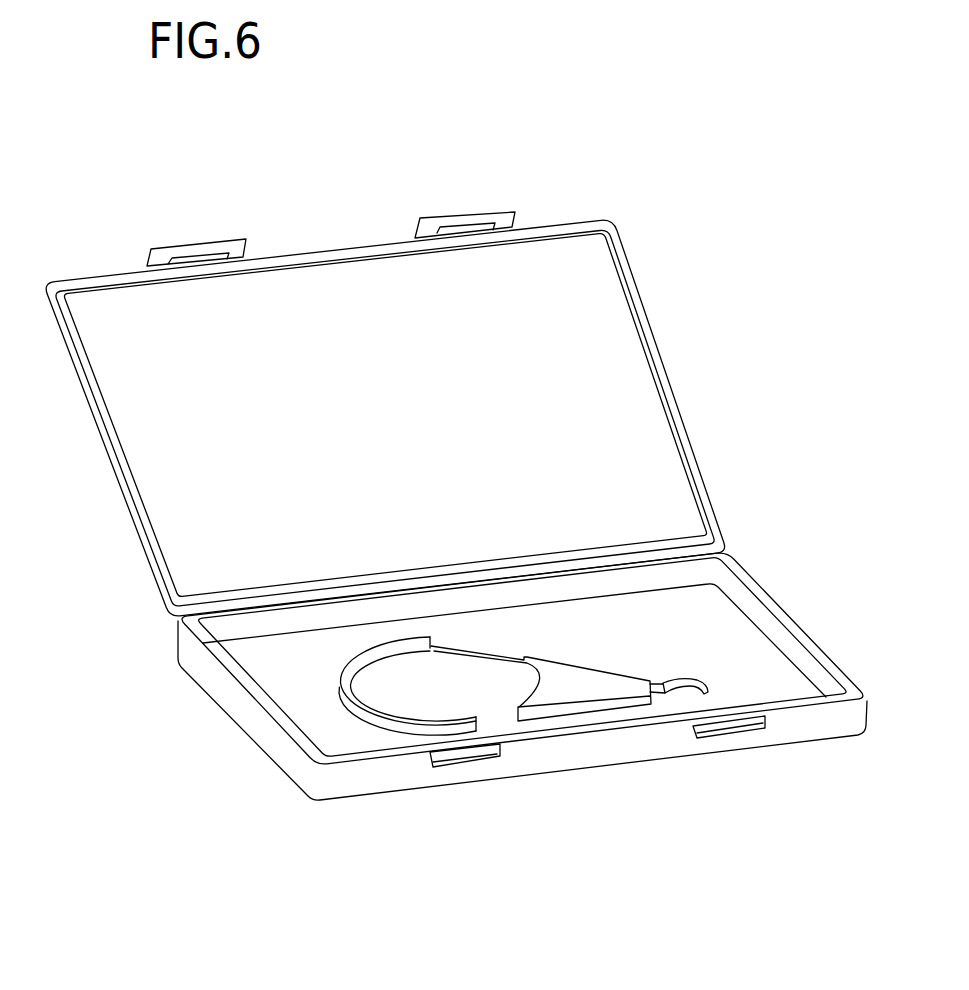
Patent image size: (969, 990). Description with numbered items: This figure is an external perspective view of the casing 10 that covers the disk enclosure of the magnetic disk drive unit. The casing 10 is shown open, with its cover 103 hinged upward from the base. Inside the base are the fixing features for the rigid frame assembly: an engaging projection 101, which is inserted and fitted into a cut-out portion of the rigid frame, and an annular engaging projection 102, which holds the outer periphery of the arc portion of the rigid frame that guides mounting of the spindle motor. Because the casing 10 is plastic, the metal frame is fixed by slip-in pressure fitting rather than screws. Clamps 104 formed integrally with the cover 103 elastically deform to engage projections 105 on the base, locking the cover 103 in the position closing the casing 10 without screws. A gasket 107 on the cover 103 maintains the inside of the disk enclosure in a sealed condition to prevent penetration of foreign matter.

The casing 10 is at (780, 570).
The engaging projection 101 is at (587, 703).
The annular engaging projection 102 is at (388, 726).
The cover 103 is at (668, 478).
The clamp 104 is at (236, 249).
The projection 105 is at (476, 758).
The gasket 107 is at (663, 357).